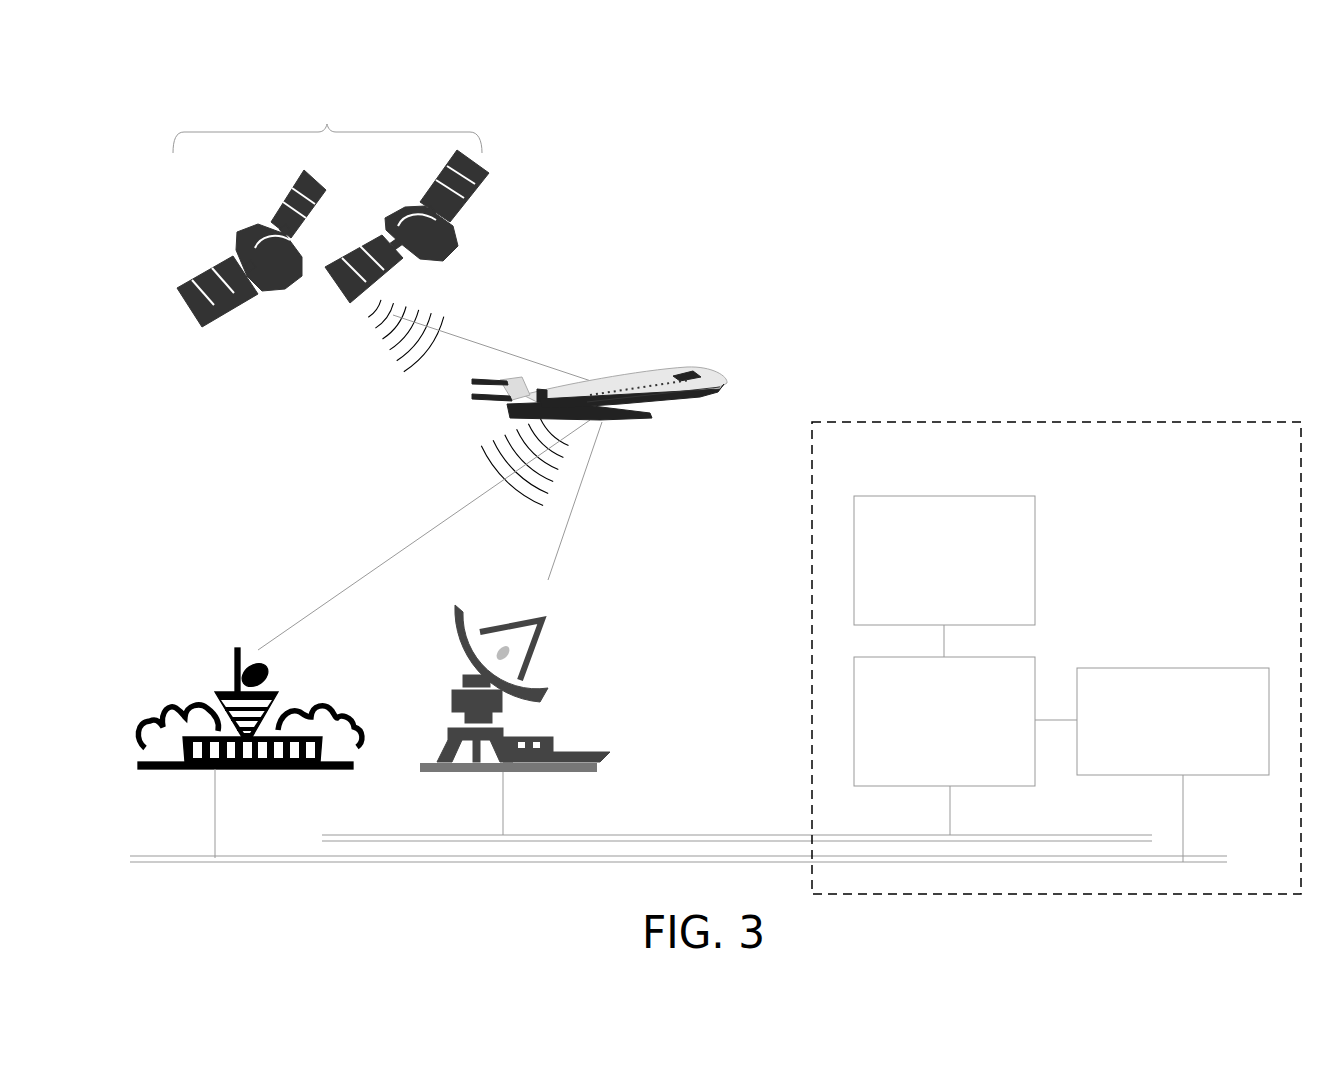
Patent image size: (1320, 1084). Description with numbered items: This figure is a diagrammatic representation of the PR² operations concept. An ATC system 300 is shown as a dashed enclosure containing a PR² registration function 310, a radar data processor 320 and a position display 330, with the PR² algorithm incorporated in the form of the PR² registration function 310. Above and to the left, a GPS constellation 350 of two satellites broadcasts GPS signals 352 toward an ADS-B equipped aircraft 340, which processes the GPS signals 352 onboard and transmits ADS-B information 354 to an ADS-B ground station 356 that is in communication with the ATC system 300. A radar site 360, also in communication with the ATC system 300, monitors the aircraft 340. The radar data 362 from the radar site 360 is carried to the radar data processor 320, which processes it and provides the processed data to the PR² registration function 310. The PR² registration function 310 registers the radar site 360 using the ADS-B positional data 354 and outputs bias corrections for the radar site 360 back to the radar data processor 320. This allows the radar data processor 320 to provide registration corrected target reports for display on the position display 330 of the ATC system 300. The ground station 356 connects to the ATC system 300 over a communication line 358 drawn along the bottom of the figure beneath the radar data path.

The ATC system 300 is at (1053, 421).
The PR² registration function 310 is at (1255, 668).
The radar data processor 320 is at (1037, 686).
The position display 330 is at (1036, 539).
The ADS-B equipped aircraft 340 is at (712, 382).
The GPS constellation 350 is at (327, 130).
The GPS broadcast signals 352 is at (376, 380).
The ADS-B information 354 is at (470, 472).
The ADS-B ground station 356 is at (222, 770).
The communication line 358 is at (262, 866).
The radar site 360 is at (538, 652).
The radar data 362 is at (738, 840).